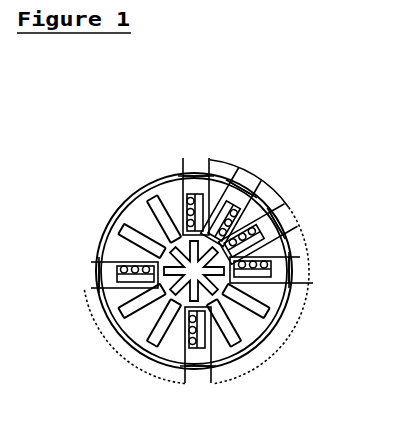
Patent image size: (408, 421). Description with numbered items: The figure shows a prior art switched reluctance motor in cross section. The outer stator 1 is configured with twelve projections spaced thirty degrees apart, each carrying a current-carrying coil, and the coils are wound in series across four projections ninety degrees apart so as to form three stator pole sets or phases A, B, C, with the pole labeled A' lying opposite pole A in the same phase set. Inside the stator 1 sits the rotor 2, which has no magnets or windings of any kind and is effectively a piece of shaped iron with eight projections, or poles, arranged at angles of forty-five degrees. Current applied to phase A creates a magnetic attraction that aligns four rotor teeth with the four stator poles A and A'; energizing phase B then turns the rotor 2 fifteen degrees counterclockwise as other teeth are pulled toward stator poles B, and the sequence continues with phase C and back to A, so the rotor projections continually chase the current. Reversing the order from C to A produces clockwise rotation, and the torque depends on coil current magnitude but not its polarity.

The stator 1 is at (127, 233).
The rotor 2 is at (196, 273).
The stator pole set (phase A) A is at (194, 178).
The stator pole set (phase A, opposite pole) A' is at (110, 265).
The stator pole set (phase B) B is at (231, 180).
The stator pole set (phase C) C is at (272, 211).